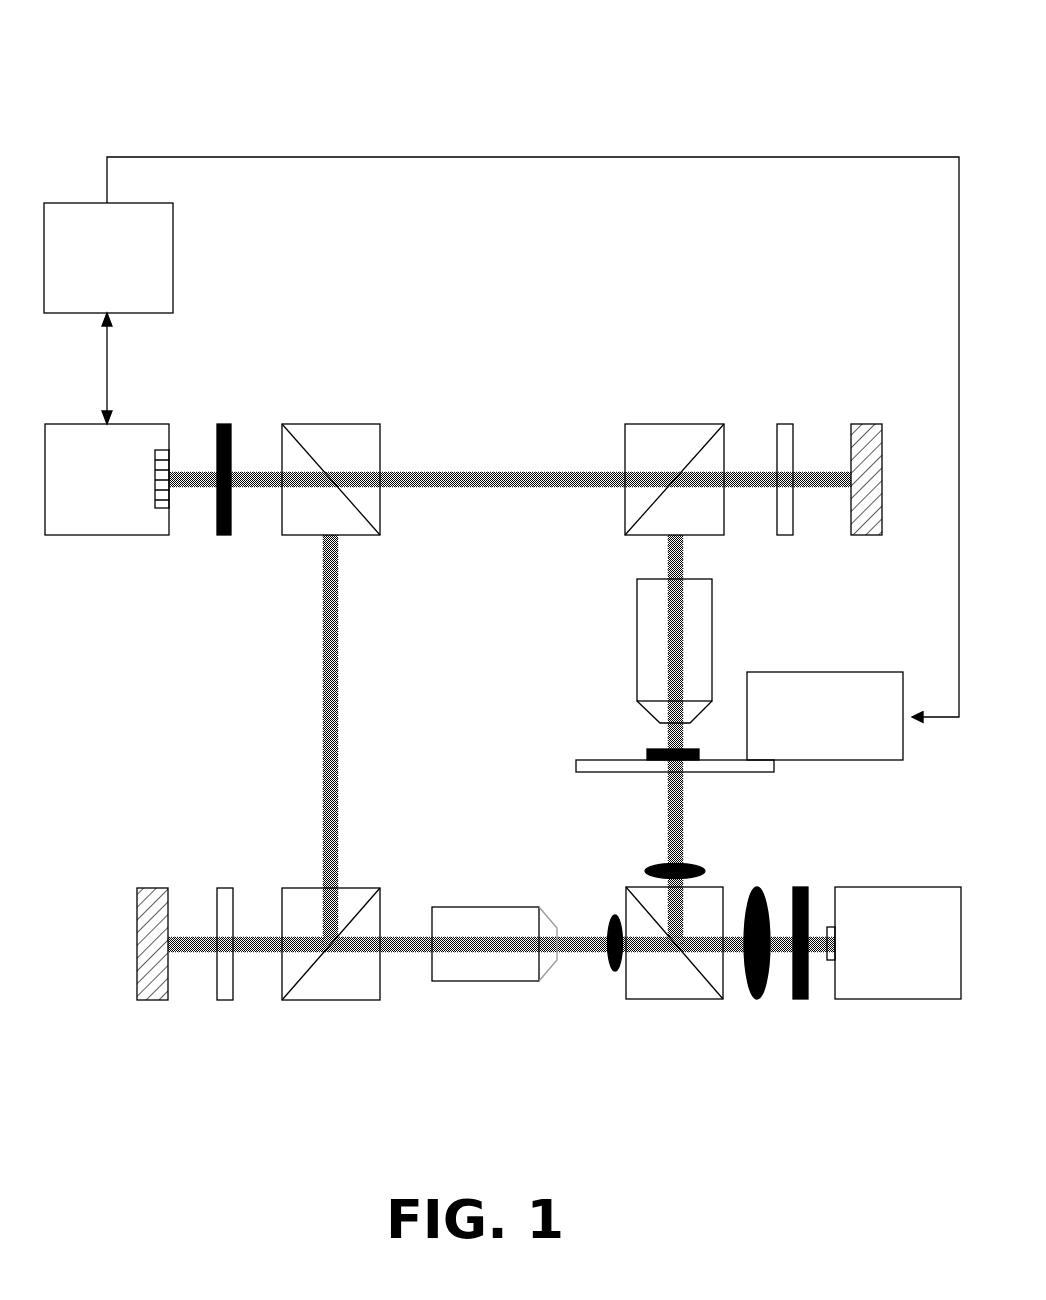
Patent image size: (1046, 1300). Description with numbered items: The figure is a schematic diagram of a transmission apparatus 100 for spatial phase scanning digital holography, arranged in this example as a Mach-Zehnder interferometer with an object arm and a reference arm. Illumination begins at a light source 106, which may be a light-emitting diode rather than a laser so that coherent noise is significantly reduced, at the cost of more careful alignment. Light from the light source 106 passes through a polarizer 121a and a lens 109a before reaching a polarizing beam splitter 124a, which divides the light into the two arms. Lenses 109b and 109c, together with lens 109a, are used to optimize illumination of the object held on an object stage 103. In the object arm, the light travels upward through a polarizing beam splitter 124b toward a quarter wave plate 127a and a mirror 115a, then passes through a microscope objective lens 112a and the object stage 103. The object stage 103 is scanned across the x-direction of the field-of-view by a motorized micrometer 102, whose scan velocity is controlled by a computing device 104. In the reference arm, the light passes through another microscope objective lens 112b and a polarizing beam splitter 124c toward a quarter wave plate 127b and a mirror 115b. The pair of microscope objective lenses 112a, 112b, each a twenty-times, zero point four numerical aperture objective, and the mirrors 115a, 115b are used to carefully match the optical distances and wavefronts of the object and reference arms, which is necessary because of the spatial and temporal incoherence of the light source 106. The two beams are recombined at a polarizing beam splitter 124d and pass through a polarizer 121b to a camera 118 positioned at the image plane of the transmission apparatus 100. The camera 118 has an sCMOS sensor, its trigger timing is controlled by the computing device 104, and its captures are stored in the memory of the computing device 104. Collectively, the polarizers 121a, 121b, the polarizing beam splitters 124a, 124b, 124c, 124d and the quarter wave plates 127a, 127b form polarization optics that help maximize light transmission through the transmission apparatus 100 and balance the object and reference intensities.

The transmission apparatus 100 is at (503, 117).
The motorized micrometer 102 is at (825, 716).
The object stage 103 is at (603, 759).
The computing device 104 is at (108, 258).
The light source 106 is at (930, 1078).
The lens 109a is at (753, 1000).
The lens 109b is at (665, 863).
The lens 109c is at (612, 970).
The microscope objective lens 112a is at (637, 653).
The microscope objective lens 112b is at (495, 906).
The mirror 115a is at (865, 537).
The mirror 115b is at (153, 888).
The camera 118 is at (75, 600).
The polarizer 121a is at (802, 1001).
The polarizer 121b is at (223, 424).
The polarizing beam splitter 124a is at (651, 1001).
The polarizing beam splitter 124b is at (680, 424).
The polarizing beam splitter 124c is at (320, 1002).
The polarizing beam splitter 124d is at (350, 424).
The quarter wave plate 127a is at (783, 424).
The quarter wave plate 127b is at (225, 888).